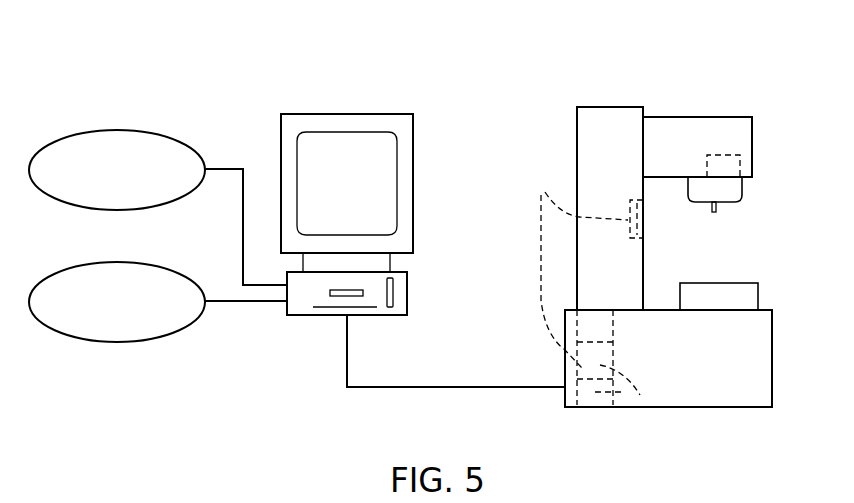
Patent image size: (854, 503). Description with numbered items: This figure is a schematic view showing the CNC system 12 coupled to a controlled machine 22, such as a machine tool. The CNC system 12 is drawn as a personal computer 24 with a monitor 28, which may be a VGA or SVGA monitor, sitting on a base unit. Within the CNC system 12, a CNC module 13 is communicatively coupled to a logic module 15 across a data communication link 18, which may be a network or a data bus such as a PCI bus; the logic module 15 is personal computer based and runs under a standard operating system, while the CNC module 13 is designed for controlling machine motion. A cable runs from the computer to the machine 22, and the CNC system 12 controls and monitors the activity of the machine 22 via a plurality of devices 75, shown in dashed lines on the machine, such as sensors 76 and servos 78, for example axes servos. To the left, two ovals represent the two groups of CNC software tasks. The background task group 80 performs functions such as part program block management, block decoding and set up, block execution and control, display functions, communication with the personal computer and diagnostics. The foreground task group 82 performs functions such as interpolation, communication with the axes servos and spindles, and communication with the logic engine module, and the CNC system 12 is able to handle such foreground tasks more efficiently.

The CNC system 12 is at (423, 209).
The CNC module 13 is at (407, 293).
The logic module 15 is at (347, 297).
The data communication link 18 is at (362, 308).
The machine 22 is at (686, 92).
The personal computer 24 is at (433, 206).
The monitor 28 is at (382, 157).
The devices 75 is at (579, 267).
The sensors 76 is at (748, 165).
The servos 78 is at (590, 325).
The background task group 80 is at (117, 131).
The foreground task group 82 is at (118, 342).